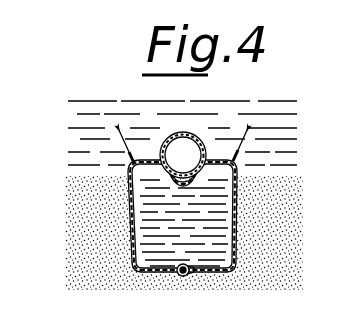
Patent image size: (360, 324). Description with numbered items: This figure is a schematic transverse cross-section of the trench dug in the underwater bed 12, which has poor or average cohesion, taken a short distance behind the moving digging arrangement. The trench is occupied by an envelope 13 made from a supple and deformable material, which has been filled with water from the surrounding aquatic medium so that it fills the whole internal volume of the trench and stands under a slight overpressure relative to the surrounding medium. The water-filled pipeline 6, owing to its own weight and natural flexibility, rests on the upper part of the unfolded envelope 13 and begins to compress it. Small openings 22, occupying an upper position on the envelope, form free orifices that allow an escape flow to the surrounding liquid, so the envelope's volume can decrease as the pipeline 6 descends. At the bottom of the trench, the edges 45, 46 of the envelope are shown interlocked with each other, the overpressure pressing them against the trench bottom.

The pipeline 6 is at (183, 155).
The underwater bed 12 is at (277, 250).
The envelope 13 is at (128, 210).
The small openings 22 is at (127, 158).
The edge of the envelope 45 is at (174, 276).
The edge of the envelope 46 is at (192, 280).